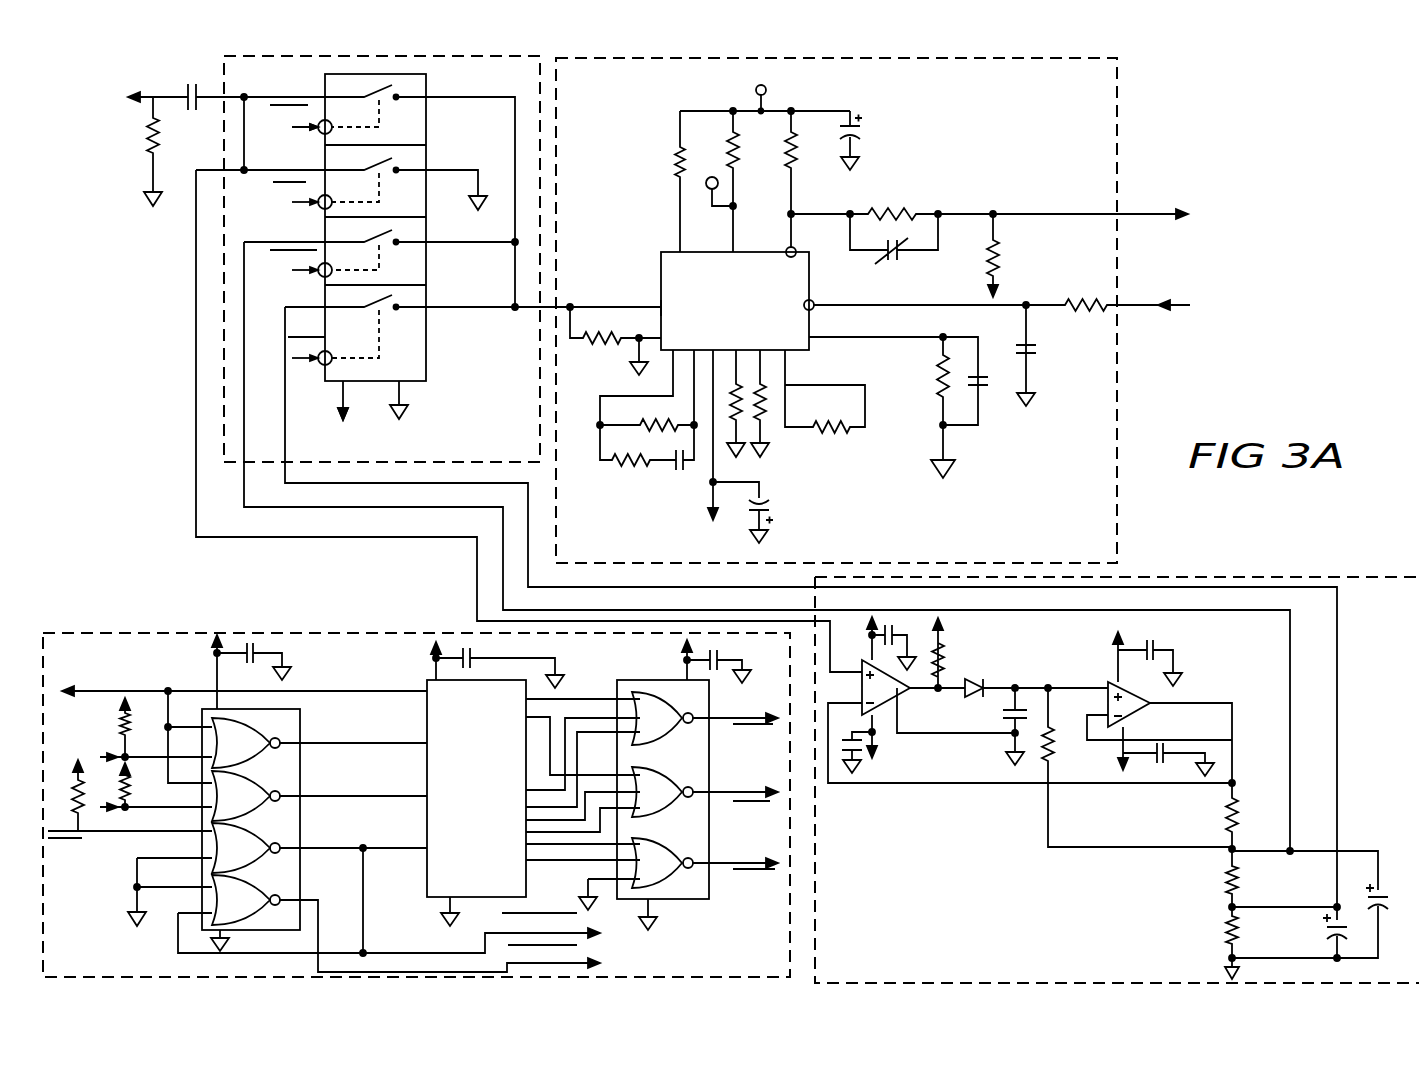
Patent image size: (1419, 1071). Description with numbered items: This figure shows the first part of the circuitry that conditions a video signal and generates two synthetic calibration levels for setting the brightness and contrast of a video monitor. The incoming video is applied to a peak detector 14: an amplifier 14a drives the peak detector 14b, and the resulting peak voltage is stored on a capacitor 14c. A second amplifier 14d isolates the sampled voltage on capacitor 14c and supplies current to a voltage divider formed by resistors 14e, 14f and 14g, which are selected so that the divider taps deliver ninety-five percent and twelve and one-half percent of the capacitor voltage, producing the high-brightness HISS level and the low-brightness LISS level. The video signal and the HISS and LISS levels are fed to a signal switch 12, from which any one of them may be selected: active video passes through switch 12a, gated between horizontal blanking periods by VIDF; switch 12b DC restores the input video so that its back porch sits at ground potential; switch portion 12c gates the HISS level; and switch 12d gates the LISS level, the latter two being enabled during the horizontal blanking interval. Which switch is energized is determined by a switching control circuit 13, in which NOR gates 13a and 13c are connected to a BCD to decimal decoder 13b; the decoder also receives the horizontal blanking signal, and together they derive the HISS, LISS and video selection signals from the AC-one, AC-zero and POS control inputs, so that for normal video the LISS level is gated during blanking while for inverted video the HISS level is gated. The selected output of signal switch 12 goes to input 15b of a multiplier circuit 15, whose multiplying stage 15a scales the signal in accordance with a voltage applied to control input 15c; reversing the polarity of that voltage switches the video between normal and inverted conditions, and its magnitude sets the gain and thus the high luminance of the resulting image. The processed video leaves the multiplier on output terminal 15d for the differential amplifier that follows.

The signal switch 12 is at (498, 455).
The switch 12a is at (412, 124).
The switch 12b is at (410, 203).
The signal switch portion 12c is at (412, 273).
The switch 12d is at (412, 347).
The switching control circuit 13 is at (360, 672).
The NOR gates 13a is at (303, 732).
The BCD to decimal decoder 13b is at (490, 862).
The NOR gates 13c is at (697, 840).
The peak detector 14 is at (958, 927).
The amplifier 14a is at (886, 687).
The peak detector 14b is at (1003, 657).
The capacitor 14c is at (1022, 705).
The amplifier 14d is at (1140, 694).
The resistor 14e is at (1227, 819).
The resistor 14f is at (1226, 889).
The resistor 14g is at (1226, 935).
The multiplier circuit 15 is at (1010, 524).
The multiplier integrated circuit 15a is at (732, 318).
The input 15b is at (661, 305).
The input 15c is at (814, 300).
The terminal 15d is at (796, 249).